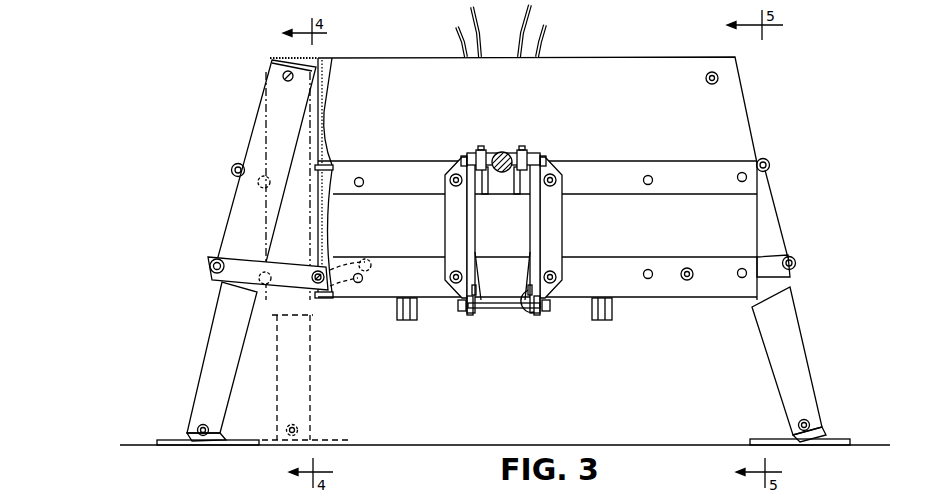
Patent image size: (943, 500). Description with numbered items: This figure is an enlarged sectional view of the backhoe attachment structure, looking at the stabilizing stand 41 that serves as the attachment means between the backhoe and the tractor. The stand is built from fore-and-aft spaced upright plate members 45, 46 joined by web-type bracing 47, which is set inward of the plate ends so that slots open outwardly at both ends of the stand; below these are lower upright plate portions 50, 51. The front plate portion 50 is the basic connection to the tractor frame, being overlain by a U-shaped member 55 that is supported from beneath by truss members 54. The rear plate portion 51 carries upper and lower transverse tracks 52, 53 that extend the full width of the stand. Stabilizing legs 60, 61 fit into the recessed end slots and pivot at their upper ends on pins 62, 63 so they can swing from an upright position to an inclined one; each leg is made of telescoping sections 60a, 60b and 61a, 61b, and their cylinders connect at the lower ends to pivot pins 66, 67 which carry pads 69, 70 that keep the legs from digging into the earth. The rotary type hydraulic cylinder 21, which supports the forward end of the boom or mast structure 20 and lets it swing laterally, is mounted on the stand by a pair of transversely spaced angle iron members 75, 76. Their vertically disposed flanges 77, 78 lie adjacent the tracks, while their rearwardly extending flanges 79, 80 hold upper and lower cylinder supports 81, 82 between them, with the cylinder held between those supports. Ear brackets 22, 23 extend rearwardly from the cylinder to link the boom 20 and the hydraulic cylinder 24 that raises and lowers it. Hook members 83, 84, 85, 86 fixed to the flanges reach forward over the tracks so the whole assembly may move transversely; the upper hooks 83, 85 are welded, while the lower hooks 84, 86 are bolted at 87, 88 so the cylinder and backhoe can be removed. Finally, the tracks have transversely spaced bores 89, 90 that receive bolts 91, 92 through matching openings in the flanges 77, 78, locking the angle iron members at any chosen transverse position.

The boom or mast structure 20 is at (526, 312).
The rotary type hydraulic cylinder 21 is at (528, 240).
The ear bracket 22 is at (491, 256).
The ear bracket 23 is at (484, 150).
The hydraulic cylinder 24 is at (507, 150).
The stabilizing stand 41 is at (751, 123).
The front upright plate member 45 is at (334, 86).
The rear upright plate member 46 is at (404, 57).
The web-type bracing 47 is at (326, 130).
The lower front upright plate portion 50 is at (323, 227).
The lower rear upright plate portion 51 is at (745, 210).
The upper transverse track 52 is at (383, 166).
The lower transverse track 53 is at (372, 298).
The truss member 54 is at (413, 320).
The U-shaped member 55 is at (606, 320).
The stabilizing leg 60 is at (214, 290).
The telescoping section 60a is at (207, 368).
The telescoping section 60b is at (245, 212).
The stabilizing leg 61 is at (789, 286).
The telescoping section 61a is at (791, 328).
The telescoping section 61b is at (770, 218).
The pivot pin 62 is at (282, 76).
The pivot pin 63 is at (718, 78).
The pivot pin 66 is at (212, 432).
The pivot pin 67 is at (812, 424).
The pad 69 is at (225, 447).
The pad 70 is at (832, 446).
The angle iron member 75 is at (445, 228).
The angle iron member 76 is at (562, 222).
The vertically disposed flange 77 is at (447, 212).
The vertically disposed flange 78 is at (557, 205).
The rearwardly extending flange 79 is at (473, 218).
The rearwardly extending flange 80 is at (534, 211).
The upper cylinder support 81 is at (470, 153).
The lower cylinder support 82 is at (505, 309).
The upper hook member 83 is at (461, 160).
The lower hook member 84 is at (471, 314).
The upper hook member 85 is at (546, 160).
The lower hook member 86 is at (541, 312).
The bolt 87 is at (459, 308).
The bolt 88 is at (551, 306).
The bore 89 is at (361, 187).
The bore 90 is at (372, 270).
The bolt 91 is at (449, 180).
The bolt 92 is at (449, 277).